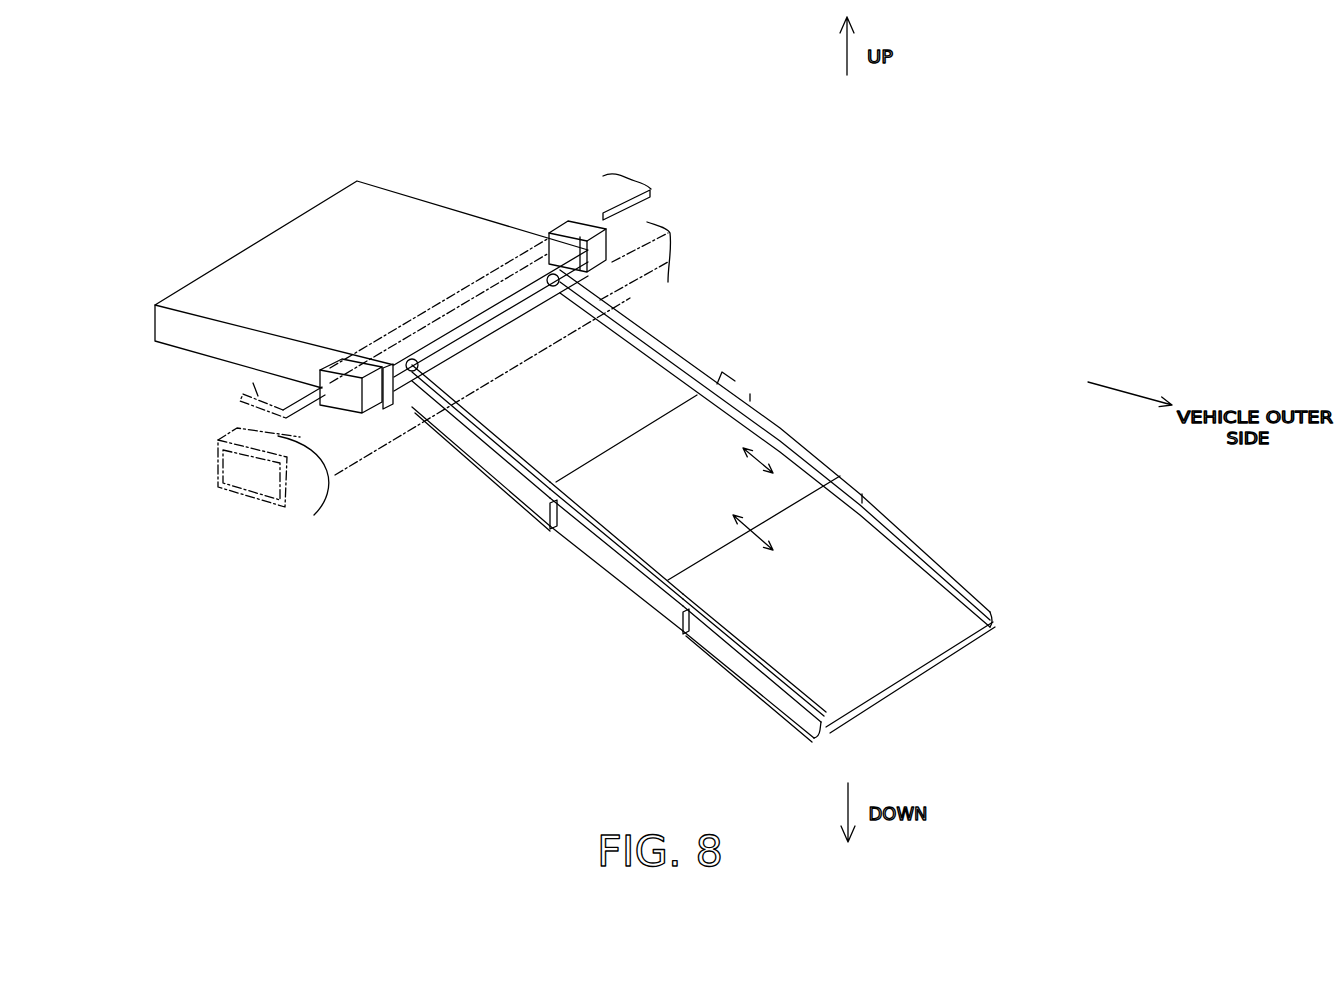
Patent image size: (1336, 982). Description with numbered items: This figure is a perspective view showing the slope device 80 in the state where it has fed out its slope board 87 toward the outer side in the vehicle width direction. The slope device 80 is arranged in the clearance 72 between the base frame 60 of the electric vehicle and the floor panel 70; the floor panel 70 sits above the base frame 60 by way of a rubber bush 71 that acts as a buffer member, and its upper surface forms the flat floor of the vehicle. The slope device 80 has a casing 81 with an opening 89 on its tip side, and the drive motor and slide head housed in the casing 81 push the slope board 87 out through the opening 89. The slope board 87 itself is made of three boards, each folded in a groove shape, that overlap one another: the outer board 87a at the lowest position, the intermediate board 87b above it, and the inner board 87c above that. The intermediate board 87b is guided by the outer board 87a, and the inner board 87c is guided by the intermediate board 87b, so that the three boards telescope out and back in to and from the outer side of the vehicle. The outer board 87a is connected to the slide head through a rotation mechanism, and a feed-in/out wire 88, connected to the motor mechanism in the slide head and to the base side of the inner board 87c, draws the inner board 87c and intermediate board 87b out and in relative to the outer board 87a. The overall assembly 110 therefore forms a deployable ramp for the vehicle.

The vehicle ramp device 110 is at (257, 121).
The slope device 80 is at (371, 219).
The casing 81 is at (446, 198).
The floor panel 70 is at (627, 174).
The rubber bush 71 is at (343, 414).
The clearance 72 is at (314, 515).
The base frame 60 is at (267, 510).
The opening 89 is at (386, 412).
The feed-in/out wire 88 is at (672, 367).
The slope board 87 is at (703, 553).
The outer board 87a is at (503, 490).
The intermediate board 87b is at (595, 553).
The inner board 87c is at (798, 668).